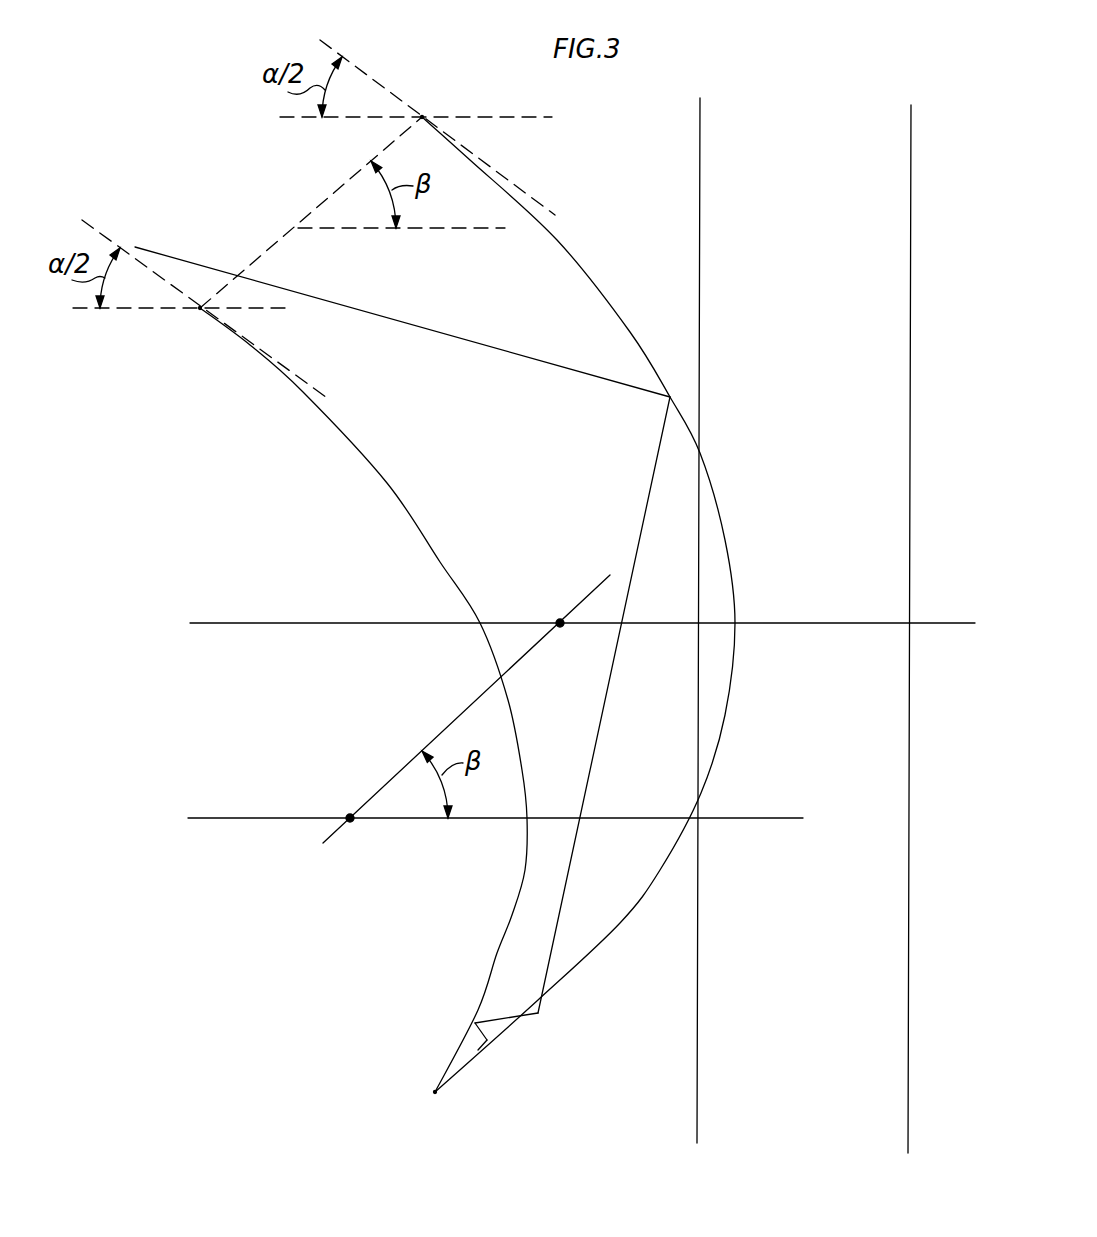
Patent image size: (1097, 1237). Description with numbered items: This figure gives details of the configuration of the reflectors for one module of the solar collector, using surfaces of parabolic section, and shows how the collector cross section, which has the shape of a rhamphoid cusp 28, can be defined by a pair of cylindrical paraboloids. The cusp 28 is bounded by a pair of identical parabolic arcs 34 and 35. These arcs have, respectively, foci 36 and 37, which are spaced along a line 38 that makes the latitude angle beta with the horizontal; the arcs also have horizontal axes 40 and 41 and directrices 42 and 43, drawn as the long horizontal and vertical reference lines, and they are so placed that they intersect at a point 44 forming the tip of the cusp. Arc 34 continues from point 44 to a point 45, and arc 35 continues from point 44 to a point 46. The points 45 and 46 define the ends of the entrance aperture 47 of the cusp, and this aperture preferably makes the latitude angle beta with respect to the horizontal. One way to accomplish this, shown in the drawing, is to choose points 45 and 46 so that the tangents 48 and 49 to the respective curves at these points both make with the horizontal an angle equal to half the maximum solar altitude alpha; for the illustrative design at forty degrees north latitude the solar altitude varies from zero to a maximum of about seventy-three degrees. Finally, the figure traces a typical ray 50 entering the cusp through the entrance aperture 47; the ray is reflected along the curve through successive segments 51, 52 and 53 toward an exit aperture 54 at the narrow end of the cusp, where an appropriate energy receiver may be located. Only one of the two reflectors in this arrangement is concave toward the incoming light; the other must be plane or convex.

The cusp 28 is at (748, 405).
The parabolic arc 34 is at (728, 542).
The parabolic arc 35 is at (443, 562).
The focus 36 is at (560, 620).
The focus 37 is at (350, 816).
The line 38 is at (458, 717).
The horizontal axis 40 is at (298, 630).
The horizontal axis 41 is at (217, 818).
The directrix 42 is at (911, 272).
The directrix 43 is at (700, 254).
The point 44 is at (437, 1090).
The point 45 is at (422, 117).
The point 46 is at (200, 308).
The entrance aperture 47 is at (330, 196).
The tangent 48 is at (500, 175).
The tangent 49 is at (325, 398).
The ray 50 is at (190, 262).
The segment 51 is at (642, 523).
The segment 52 is at (510, 1012).
The segment 53 is at (482, 1032).
The exit aperture 54 is at (477, 1058).